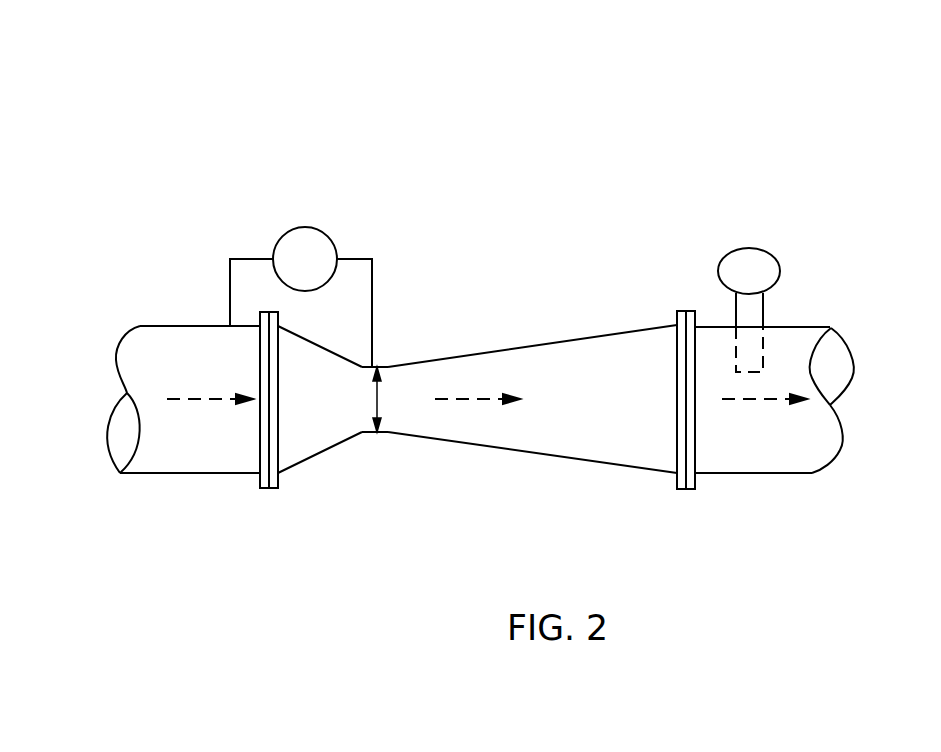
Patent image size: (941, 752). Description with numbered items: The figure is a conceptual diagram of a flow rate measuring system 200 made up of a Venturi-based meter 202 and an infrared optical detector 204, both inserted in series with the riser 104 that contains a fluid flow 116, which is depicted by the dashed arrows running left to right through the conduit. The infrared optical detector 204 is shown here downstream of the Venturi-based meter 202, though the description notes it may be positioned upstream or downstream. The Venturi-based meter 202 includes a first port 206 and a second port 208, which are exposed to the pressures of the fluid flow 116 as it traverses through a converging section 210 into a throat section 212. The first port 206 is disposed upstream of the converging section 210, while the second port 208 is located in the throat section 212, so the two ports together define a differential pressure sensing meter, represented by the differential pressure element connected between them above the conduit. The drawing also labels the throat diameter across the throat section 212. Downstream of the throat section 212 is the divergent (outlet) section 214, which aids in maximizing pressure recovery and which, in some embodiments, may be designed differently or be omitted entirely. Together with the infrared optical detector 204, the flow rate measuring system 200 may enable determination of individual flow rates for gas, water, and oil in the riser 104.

The flow rate measuring system 200 is at (735, 102).
The riser 104 is at (207, 473).
The fluid flow 116 is at (182, 400).
The Venturi-based meter 202 is at (316, 228).
The infrared optical detector 204 is at (759, 249).
The first port 206 is at (229, 300).
The second port 208 is at (373, 303).
The converging section 210 is at (316, 457).
The throat section 212 is at (377, 434).
The divergent (outlet) section 214 is at (548, 457).